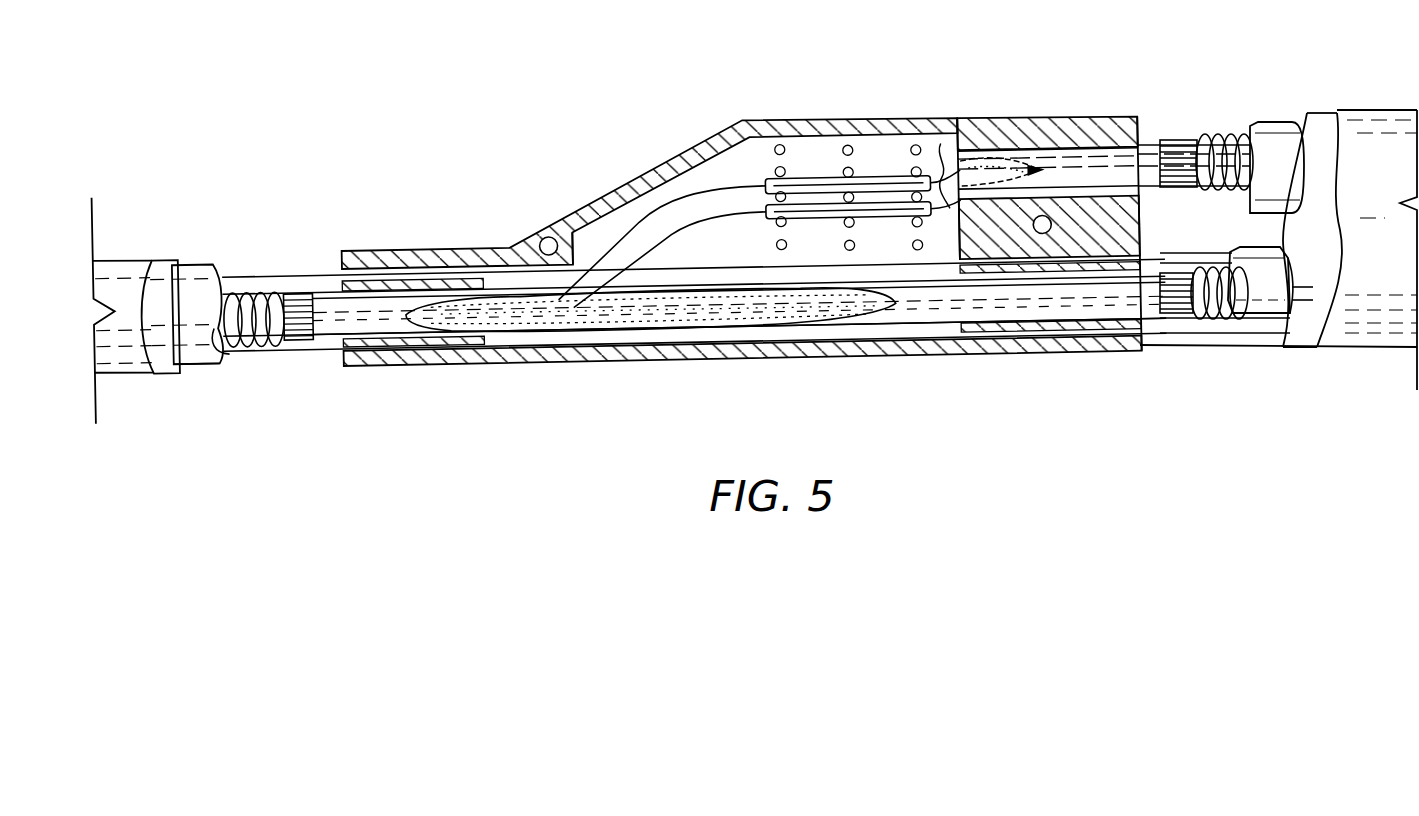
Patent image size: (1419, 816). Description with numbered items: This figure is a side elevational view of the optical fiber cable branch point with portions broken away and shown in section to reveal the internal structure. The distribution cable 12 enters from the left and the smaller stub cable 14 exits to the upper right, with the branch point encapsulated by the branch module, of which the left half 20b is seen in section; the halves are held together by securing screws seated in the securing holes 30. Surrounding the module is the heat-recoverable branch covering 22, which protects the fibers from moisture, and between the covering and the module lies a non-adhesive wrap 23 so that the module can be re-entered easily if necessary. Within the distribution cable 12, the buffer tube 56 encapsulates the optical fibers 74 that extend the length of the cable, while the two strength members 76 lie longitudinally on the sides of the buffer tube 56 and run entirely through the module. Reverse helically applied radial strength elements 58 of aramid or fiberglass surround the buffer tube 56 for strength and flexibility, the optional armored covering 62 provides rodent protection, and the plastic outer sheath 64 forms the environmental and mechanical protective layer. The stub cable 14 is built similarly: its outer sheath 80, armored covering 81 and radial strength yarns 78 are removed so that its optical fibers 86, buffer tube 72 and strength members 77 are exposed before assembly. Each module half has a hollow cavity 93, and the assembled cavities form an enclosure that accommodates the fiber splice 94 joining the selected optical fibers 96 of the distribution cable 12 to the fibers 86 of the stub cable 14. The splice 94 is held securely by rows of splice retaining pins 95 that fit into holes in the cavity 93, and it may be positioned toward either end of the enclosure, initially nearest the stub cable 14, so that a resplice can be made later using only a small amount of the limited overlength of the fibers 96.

The distribution cable 12 is at (200, 273).
The stub cable 14 is at (1277, 125).
The left half 20b is at (1030, 118).
The branch covering 22 is at (115, 268).
The non-adhesive wrap 23 is at (160, 370).
The securing holes 30 is at (543, 240).
The buffer tube 56 is at (335, 315).
The radial strength elements 58 is at (300, 296).
The armored covering 62 is at (262, 340).
The outer sheath 64 is at (195, 365).
The buffer tube 72 is at (1147, 150).
The optical fibers 74 is at (640, 305).
The strength members 76 is at (328, 272).
The strength members 77 is at (1153, 167).
The radial strength yarns 78 is at (1180, 145).
The outer sheath 80 is at (1292, 150).
The armored covering 81 is at (1227, 138).
The optical fibers 86 is at (965, 195).
The hollow cavity 93 is at (717, 160).
The fiber splice 94 is at (827, 207).
The splice retaining pins 95 is at (781, 140).
The optical fibers 96 is at (637, 242).